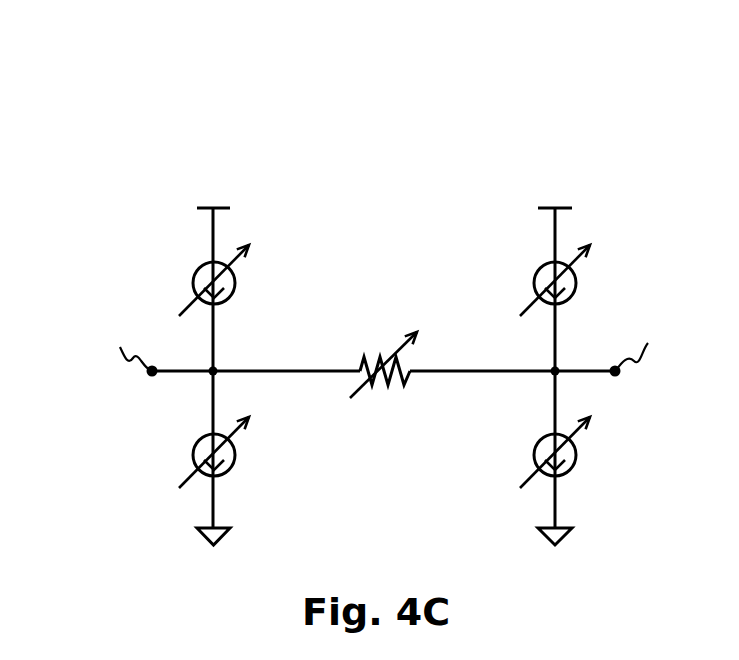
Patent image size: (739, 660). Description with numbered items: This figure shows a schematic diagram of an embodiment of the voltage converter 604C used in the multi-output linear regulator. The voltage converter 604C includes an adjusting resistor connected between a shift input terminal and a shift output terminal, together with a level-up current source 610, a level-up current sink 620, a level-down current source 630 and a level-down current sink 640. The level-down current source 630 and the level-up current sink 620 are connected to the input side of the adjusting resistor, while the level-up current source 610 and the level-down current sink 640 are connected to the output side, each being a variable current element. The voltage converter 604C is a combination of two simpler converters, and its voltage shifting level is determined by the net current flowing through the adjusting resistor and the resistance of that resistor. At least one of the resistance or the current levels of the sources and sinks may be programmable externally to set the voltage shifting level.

The voltage converter 604C is at (168, 77).
The level-up current source 610 is at (538, 280).
The level-up current sink 620 is at (198, 452).
The level-down current source 630 is at (196, 280).
The level-down current sink 640 is at (542, 450).